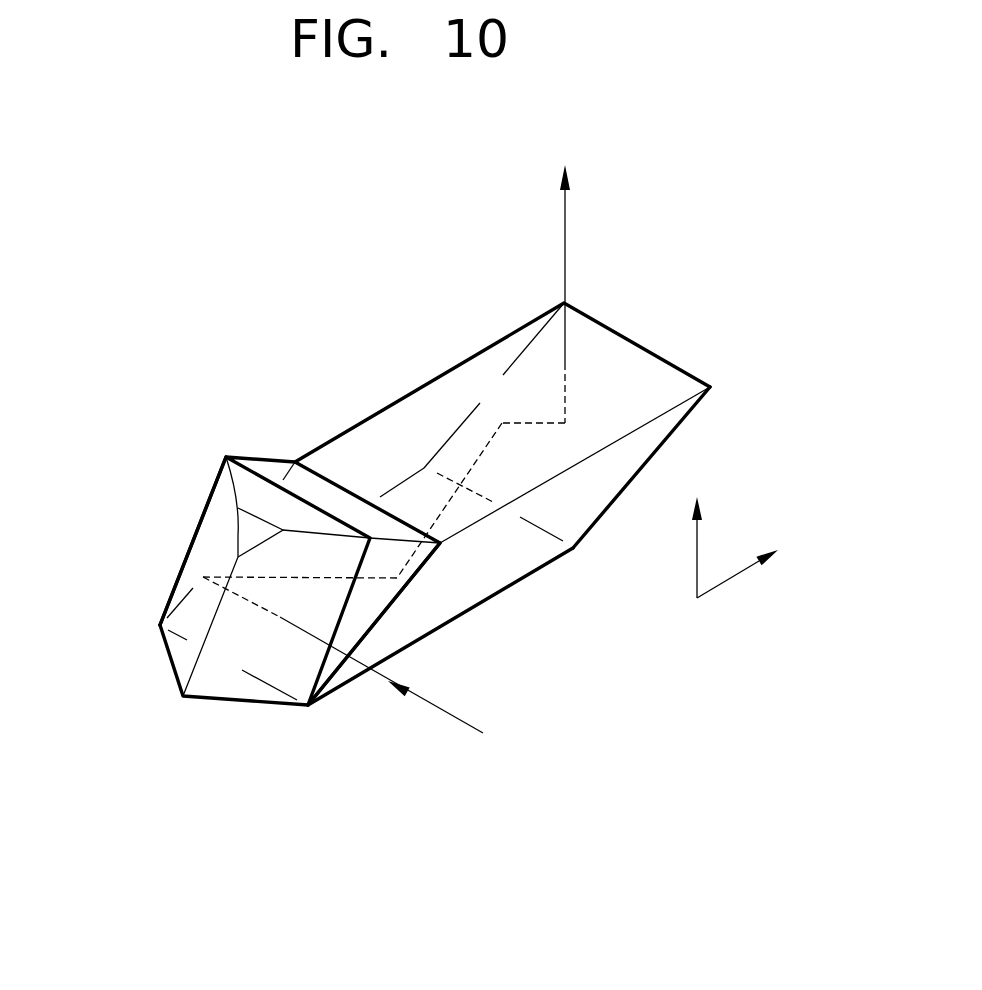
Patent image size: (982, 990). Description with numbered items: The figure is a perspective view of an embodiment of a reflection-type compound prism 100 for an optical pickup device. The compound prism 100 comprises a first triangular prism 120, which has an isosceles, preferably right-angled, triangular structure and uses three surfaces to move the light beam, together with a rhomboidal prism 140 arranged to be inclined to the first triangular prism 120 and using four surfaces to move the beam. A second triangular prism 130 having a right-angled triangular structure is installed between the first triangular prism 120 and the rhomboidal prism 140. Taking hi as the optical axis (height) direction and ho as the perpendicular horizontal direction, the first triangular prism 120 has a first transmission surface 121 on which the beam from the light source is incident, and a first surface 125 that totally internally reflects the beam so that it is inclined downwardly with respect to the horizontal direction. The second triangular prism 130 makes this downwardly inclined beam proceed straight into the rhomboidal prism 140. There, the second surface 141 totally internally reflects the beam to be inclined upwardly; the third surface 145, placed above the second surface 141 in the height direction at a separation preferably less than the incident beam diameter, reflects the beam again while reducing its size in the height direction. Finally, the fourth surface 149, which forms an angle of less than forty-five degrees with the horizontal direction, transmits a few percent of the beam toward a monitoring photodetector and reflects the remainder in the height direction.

The reflection-type compound prism 100 is at (165, 365).
The first triangular prism 120 is at (257, 463).
The first transmission surface 121 is at (217, 700).
The first surface 125 is at (197, 534).
The second triangular prism 130 is at (396, 620).
The rhomboidal prism 140 is at (656, 328).
The second surface 141 is at (537, 558).
The third surface 145 is at (450, 403).
The fourth surface 149 is at (667, 442).